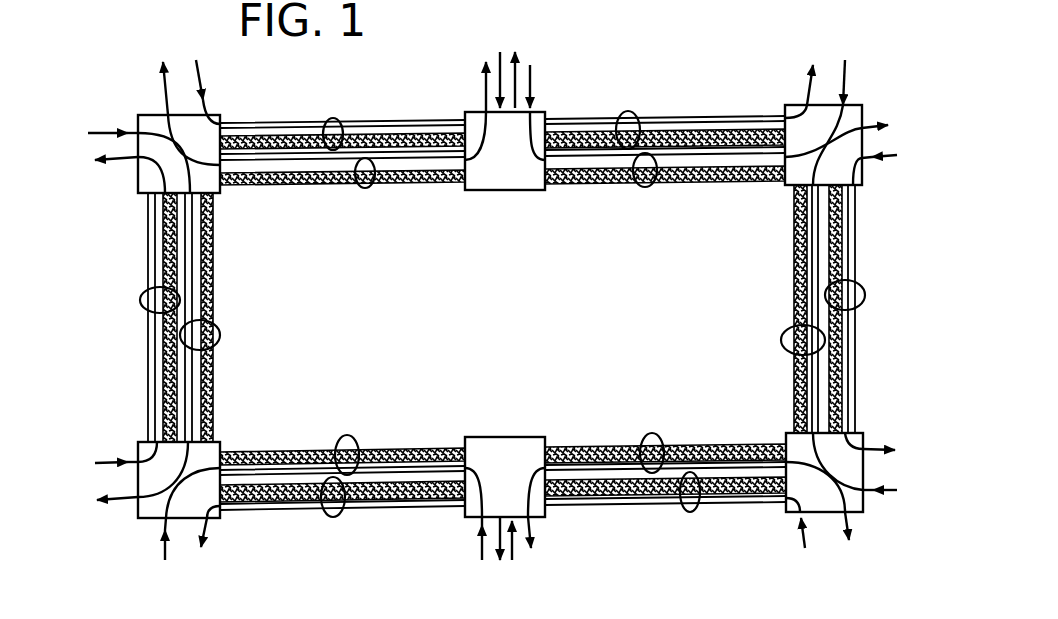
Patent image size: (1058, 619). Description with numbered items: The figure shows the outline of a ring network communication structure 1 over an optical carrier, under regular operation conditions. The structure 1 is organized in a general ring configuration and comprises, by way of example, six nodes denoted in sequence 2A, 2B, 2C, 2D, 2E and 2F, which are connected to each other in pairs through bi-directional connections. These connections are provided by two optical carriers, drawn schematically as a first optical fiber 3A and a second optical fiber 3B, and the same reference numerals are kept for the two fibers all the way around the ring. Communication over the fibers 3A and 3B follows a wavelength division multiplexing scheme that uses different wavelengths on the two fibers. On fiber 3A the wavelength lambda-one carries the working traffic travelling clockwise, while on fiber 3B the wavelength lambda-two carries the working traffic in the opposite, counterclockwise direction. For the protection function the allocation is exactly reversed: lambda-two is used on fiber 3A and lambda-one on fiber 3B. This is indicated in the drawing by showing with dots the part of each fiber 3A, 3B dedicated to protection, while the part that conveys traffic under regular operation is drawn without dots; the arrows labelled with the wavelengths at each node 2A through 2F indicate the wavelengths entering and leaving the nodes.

The ring network communication structure 1 is at (622, 80).
The node 2A is at (142, 192).
The node 2B is at (485, 178).
The node 2C is at (861, 186).
The node 2D is at (865, 513).
The node 2E is at (545, 514).
The node 2F is at (149, 512).
The first optical fiber 3A is at (334, 118).
The second optical fiber 3B is at (368, 189).